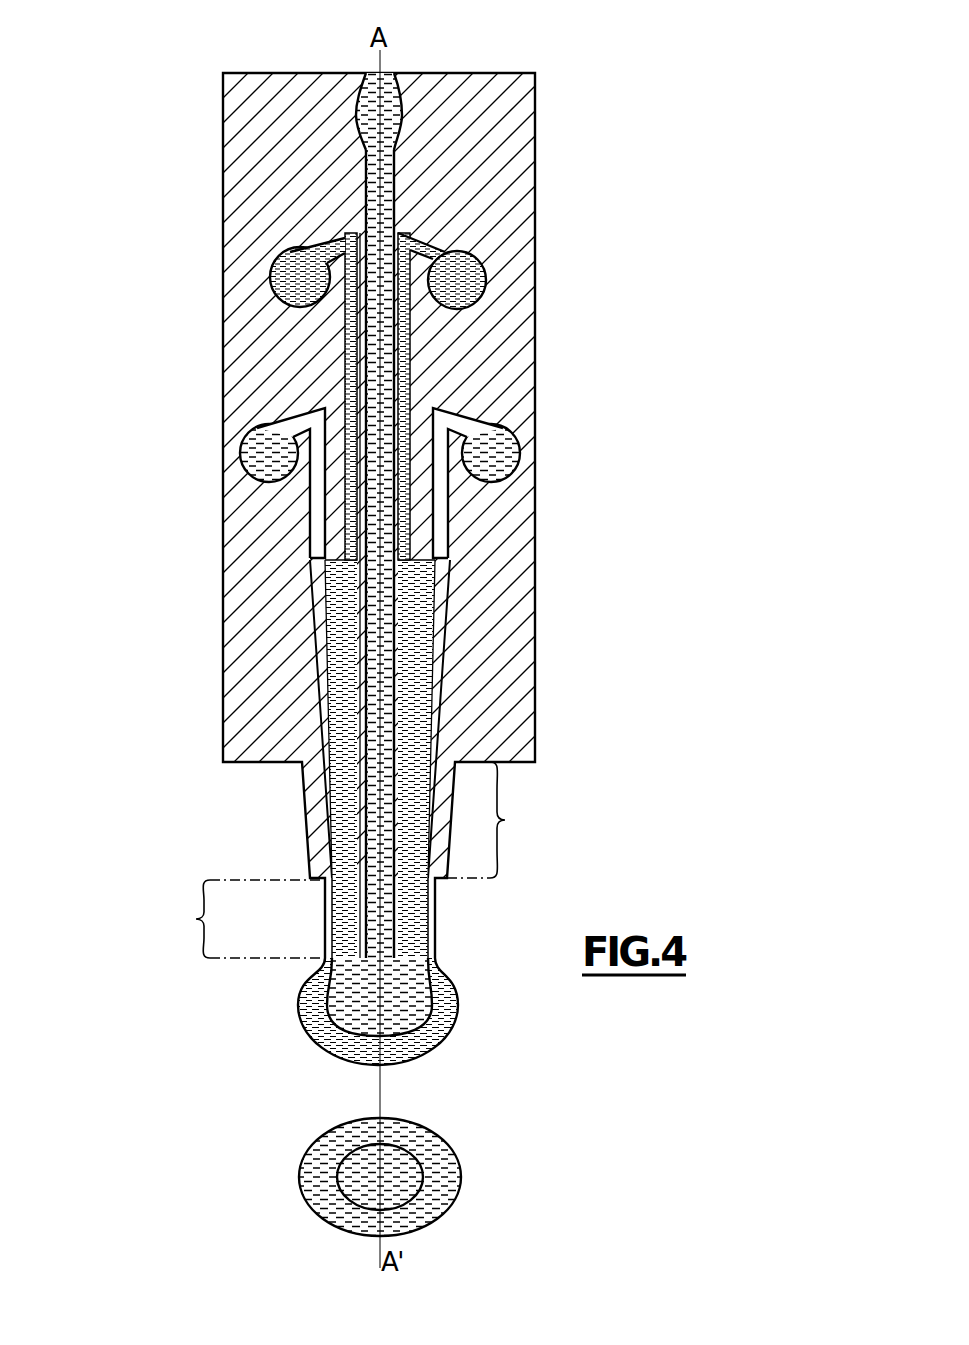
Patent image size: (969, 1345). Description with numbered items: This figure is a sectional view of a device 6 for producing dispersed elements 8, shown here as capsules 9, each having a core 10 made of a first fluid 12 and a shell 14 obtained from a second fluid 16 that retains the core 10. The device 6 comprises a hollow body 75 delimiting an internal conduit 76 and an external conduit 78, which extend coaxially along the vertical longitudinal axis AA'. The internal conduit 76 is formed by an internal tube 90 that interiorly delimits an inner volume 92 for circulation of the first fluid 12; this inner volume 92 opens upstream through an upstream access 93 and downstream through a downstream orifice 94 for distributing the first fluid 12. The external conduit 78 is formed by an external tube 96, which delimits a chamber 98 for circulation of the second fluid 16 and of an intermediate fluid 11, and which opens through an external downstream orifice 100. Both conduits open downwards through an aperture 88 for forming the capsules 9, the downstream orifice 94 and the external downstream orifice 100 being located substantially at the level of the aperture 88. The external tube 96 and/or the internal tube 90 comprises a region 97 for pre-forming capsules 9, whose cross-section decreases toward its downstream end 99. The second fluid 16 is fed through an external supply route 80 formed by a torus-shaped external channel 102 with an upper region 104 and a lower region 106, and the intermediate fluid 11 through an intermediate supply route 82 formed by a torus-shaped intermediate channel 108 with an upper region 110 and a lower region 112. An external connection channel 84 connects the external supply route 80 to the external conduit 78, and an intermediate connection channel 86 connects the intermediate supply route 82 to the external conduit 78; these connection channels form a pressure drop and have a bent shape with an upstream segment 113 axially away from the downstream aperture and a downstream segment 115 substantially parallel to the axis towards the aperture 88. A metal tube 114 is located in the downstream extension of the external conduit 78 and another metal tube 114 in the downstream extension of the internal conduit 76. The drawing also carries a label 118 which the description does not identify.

The device for producing dispersed elements 6 is at (599, 342).
The dispersed element 8 is at (431, 1109).
The capsule 9 is at (463, 1111).
The core 10 is at (420, 1210).
The intermediate fluid 11 is at (282, 296).
The first fluid 12 is at (377, 114).
The shell 14 is at (450, 1162).
The second fluid 16 is at (317, 537).
The hollow body 75 is at (556, 97).
The internal conduit 76 is at (397, 185).
The external conduit 78 is at (449, 622).
The external supply route 80 is at (499, 454).
The intermediate supply route 82 is at (470, 278).
The external connection channel 84 is at (449, 418).
The intermediate connection channel 86 is at (418, 236).
The aperture 88 is at (297, 968).
The internal tube 90 is at (392, 706).
The inner volume 92 is at (383, 745).
The upstream access 93 is at (398, 73).
The downstream orifice 94 is at (369, 964).
The external tube 96 is at (309, 638).
The region for pre-forming capsules 97 is at (342, 664).
The chamber 98 is at (336, 593).
The downstream end 99 is at (336, 859).
The external downstream orifice 100 is at (340, 880).
The external channel 102 is at (259, 453).
The upper region 104 is at (257, 437).
The lower region 106 is at (281, 469).
The intermediate channel 108 is at (272, 285).
The upper region 110 is at (307, 288).
The lower region 112 is at (338, 375).
The upstream segment 113 is at (342, 238).
The metal tube 114 is at (350, 860).
The downstream segment 115 is at (350, 362).
The slot bottom 118 is at (315, 558).